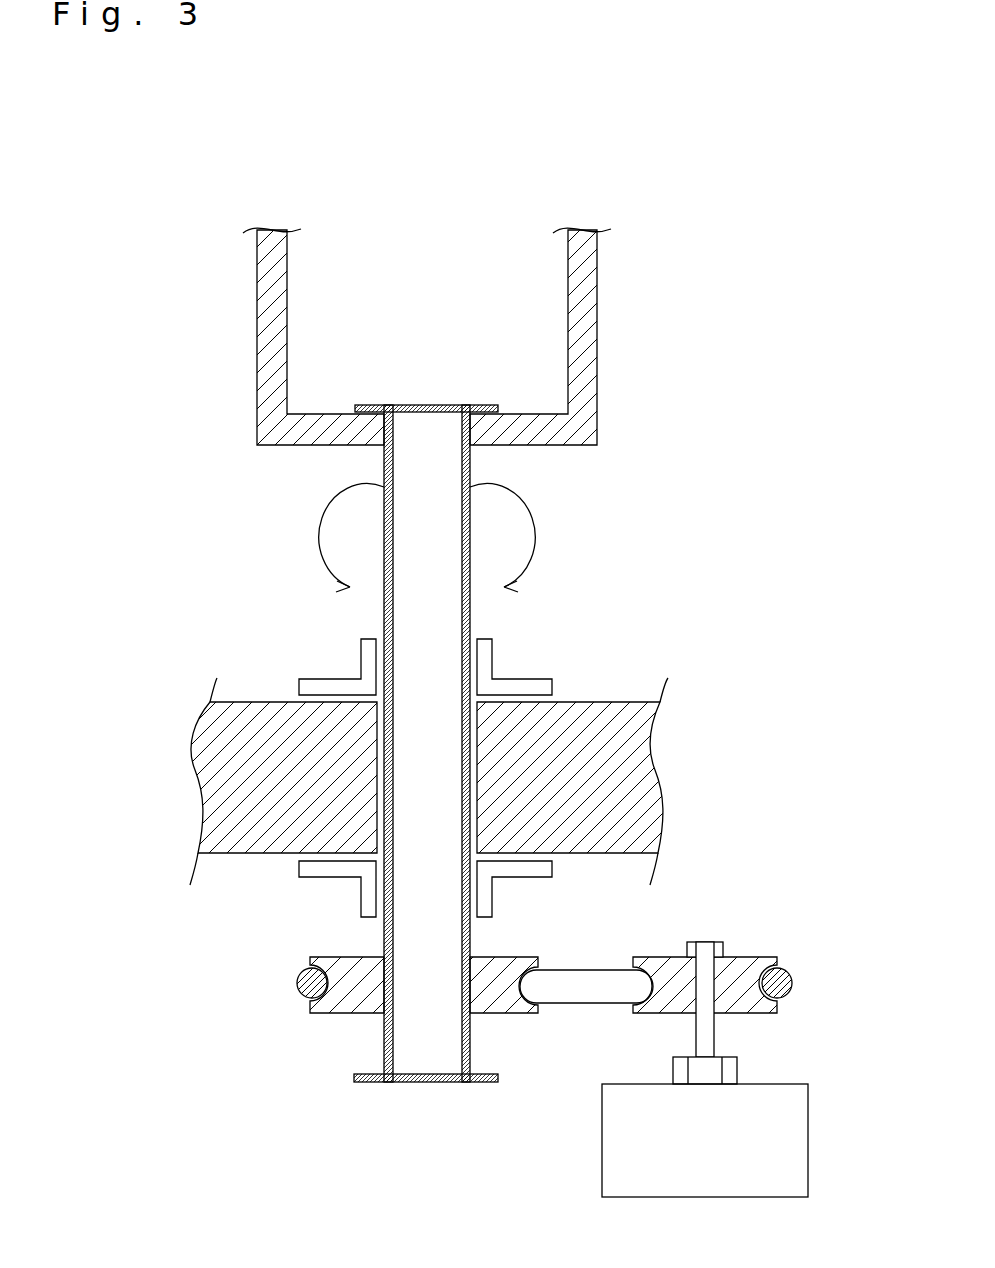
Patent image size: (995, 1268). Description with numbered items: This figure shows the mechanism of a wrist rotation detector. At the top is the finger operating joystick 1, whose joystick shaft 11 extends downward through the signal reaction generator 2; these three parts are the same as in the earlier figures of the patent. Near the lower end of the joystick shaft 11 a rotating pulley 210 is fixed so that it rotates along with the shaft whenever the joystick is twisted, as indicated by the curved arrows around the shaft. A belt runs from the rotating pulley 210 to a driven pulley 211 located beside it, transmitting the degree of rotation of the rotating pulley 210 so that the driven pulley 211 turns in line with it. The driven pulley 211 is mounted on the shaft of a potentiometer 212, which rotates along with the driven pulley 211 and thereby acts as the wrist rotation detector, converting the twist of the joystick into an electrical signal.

The finger operating joystick 1 is at (597, 382).
The joystick shaft 11 is at (470, 605).
The signal reaction generator 2 is at (605, 709).
The rotating pulley 210 is at (343, 1013).
The driven pulley 211 is at (748, 956).
The potentiometer 212 is at (780, 1083).